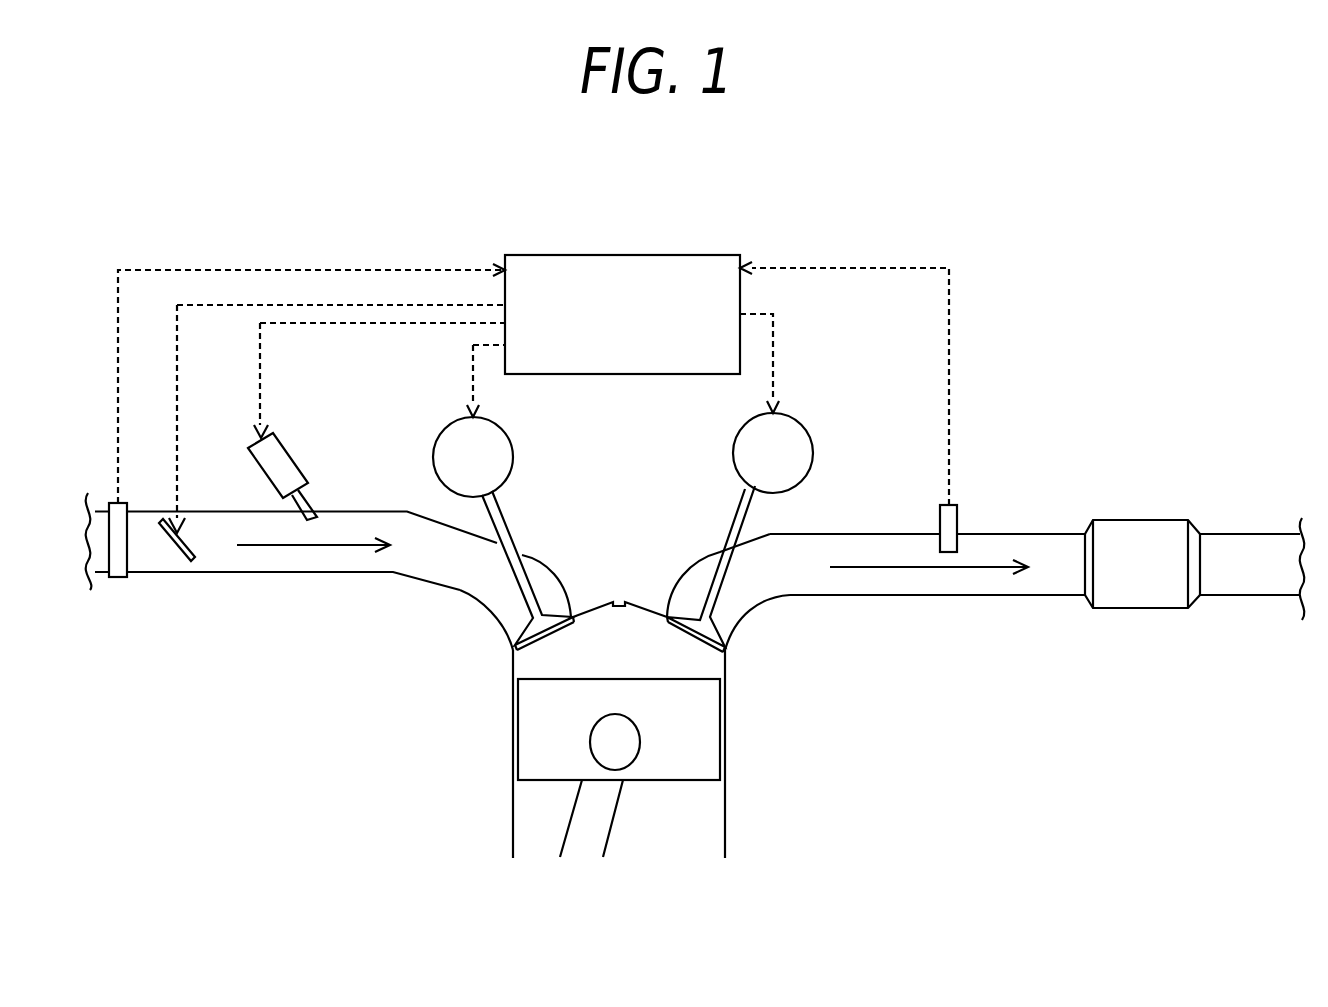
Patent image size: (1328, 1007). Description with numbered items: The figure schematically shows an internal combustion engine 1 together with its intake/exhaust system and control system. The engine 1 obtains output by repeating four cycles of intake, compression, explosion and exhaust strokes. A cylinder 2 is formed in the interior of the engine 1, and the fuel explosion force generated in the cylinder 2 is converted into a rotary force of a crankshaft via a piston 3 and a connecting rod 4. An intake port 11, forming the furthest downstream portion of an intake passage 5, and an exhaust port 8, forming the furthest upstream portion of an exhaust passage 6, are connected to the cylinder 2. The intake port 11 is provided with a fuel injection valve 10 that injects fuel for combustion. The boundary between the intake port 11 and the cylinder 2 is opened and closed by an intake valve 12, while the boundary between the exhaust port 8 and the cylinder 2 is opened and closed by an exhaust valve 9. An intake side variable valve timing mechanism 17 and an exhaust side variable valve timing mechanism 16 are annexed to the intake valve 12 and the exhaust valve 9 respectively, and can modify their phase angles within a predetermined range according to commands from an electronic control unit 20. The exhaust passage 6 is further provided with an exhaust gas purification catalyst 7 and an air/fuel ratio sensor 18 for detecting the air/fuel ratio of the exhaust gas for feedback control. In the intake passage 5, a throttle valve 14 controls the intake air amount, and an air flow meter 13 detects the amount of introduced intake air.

The internal combustion engine 1 is at (390, 781).
The cylinder 2 is at (602, 664).
The piston 3 is at (525, 762).
The connecting rod 4 is at (610, 822).
The intake passage 5 is at (340, 572).
The exhaust passage 6 is at (882, 592).
The exhaust gas purification catalyst 7 is at (1153, 520).
The exhaust port 8 is at (757, 610).
The exhaust valve 9 is at (758, 512).
The fuel injection valve 10 is at (290, 448).
The intake port 11 is at (462, 591).
The intake valve 12 is at (513, 528).
The air flow meter 13 is at (122, 582).
The throttle valve 14 is at (183, 568).
The exhaust side variable valve timing mechanism 16 is at (800, 420).
The intake side variable valve timing mechanism 17 is at (437, 437).
The air/fuel ratio sensor 18 is at (957, 512).
The electronic control unit 20 is at (663, 255).